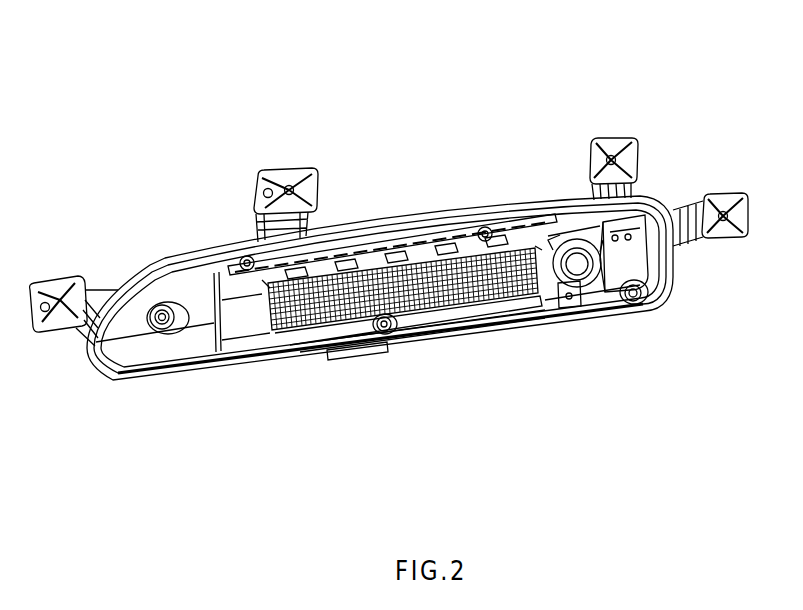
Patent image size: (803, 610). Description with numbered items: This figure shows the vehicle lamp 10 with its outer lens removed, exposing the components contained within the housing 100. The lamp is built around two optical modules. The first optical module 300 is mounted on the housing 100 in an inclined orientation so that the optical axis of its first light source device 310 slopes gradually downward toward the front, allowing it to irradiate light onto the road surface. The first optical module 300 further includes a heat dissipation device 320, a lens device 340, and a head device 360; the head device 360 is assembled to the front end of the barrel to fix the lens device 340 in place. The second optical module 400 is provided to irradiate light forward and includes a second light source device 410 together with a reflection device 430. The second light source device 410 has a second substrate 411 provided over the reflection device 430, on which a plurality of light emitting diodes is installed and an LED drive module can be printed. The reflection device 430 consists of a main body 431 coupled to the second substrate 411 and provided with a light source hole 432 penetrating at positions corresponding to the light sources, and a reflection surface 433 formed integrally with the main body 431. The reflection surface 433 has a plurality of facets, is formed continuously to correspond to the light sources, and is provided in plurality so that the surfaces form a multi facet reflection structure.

The vehicle lamp 10 is at (215, 161).
The housing 100 is at (210, 247).
The first optical module 300 is at (554, 125).
The first light source device 310 is at (643, 213).
The heat dissipation device 320 is at (548, 234).
The lens device 340 is at (657, 310).
The head device 360 is at (583, 287).
The second optical module 400 is at (432, 85).
The second light source device 410 is at (390, 160).
The second substrate 411 is at (362, 255).
The reflection device 430 is at (375, 407).
The main body 431 is at (303, 327).
The light source hole 432 is at (475, 310).
The reflection surface 433 is at (362, 326).